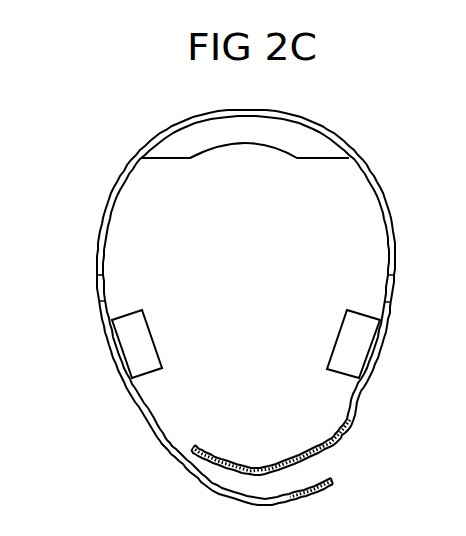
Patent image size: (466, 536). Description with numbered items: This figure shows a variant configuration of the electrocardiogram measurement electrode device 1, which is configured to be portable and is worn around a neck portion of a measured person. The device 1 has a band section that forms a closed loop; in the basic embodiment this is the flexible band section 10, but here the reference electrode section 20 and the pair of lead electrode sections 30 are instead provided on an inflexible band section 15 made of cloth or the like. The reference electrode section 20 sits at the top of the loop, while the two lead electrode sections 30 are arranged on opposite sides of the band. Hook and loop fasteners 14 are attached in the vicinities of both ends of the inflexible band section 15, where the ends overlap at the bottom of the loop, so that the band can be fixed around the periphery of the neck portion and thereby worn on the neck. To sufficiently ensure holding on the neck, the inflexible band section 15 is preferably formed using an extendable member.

The electrocardiogram measurement electrode device 1 is at (103, 172).
The flexible band section 10 is at (177, 125).
The hook and loop fasteners 14 is at (342, 468).
The inflexible band section 15 is at (188, 470).
The reference electrode section 20 is at (246, 135).
The lead electrode sections 30 is at (130, 348).